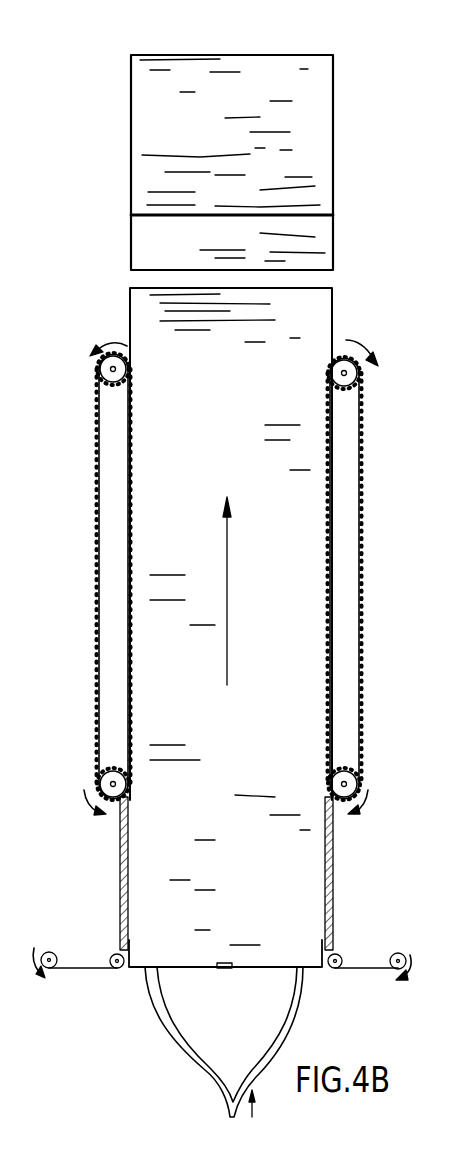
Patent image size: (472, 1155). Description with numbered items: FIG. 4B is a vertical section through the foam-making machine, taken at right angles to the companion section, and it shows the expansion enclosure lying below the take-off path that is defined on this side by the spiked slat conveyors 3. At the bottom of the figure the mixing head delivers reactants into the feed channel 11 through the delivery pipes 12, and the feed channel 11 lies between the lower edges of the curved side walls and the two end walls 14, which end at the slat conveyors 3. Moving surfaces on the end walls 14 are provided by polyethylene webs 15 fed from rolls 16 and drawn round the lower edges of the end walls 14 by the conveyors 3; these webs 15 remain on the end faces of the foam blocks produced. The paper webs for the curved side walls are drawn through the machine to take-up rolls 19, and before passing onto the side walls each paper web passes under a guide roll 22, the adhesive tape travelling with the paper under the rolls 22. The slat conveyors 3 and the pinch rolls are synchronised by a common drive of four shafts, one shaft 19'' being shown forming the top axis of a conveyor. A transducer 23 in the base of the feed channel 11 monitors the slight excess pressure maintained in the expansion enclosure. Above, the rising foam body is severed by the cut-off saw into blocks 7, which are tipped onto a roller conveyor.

The block 7 is at (140, 178).
The take-up roll 19 is at (353, 554).
The shaft 19'' is at (353, 554).
The spiked slat conveyor 3 is at (98, 622).
The end wall 14 is at (120, 878).
The feed channel 11 is at (138, 966).
The transducer 23 is at (232, 968).
The delivery pipe 12 is at (245, 1072).
The roll 16 is at (49, 952).
The guide roll 22 is at (112, 955).
The polyethylene web 15 is at (81, 970).